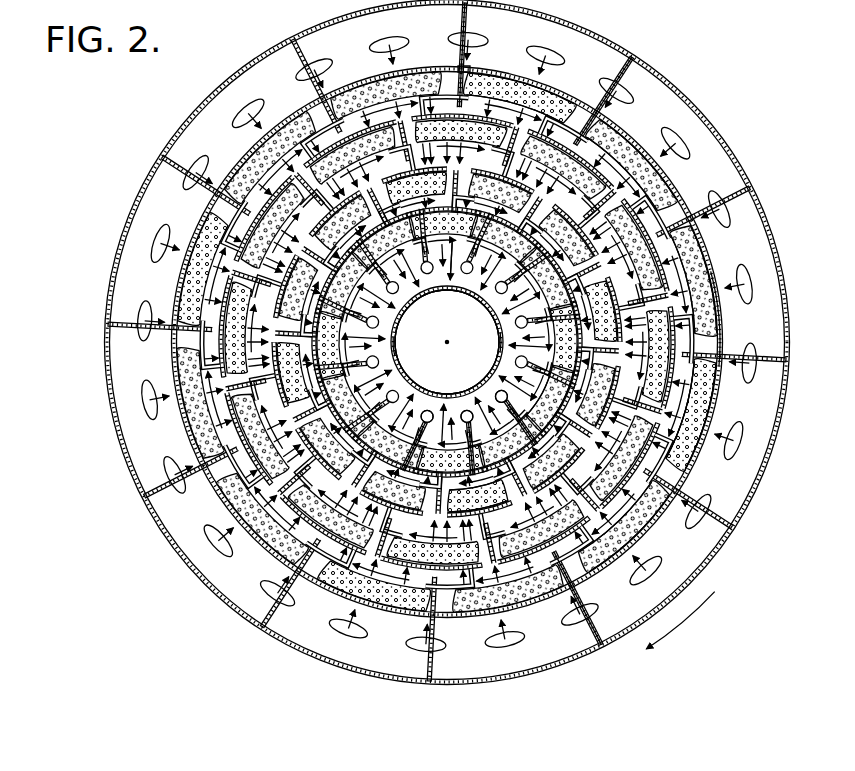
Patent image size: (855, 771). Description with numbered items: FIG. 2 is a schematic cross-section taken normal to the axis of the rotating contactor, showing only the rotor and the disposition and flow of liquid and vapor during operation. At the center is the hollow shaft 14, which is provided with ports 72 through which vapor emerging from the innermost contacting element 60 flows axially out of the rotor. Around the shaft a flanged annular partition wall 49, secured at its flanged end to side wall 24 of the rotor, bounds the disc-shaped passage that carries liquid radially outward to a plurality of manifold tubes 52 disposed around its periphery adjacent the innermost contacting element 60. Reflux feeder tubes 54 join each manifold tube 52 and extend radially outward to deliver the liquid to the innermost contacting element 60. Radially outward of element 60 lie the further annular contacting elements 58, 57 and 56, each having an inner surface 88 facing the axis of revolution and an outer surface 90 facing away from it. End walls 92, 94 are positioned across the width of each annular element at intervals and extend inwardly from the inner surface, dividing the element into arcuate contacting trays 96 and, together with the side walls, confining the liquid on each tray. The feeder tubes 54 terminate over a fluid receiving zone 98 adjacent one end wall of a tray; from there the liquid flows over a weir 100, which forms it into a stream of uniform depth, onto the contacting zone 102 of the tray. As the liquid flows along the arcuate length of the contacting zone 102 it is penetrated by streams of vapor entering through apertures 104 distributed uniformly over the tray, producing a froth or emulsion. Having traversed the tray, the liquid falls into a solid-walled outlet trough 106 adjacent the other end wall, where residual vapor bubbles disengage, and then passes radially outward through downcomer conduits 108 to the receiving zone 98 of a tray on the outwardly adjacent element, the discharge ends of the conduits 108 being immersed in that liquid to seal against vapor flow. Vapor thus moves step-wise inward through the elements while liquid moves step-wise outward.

The shaft 14 is at (396, 343).
The side wall 24 is at (605, 95).
The second partition wall 49 is at (461, 408).
The manifold tubes 52 is at (421, 416).
The reflux feeder tubes 54 is at (464, 425).
The contacting element 56 is at (655, 185).
The contacting element 57 is at (558, 598).
The contacting element 58 is at (480, 505).
The innermost contacting element 60 is at (383, 333).
The ports 72 is at (401, 320).
The inner surface 88 is at (672, 452).
The outer surface 90 is at (647, 522).
The end wall 92 is at (700, 382).
The end wall 94 is at (690, 238).
The arcuate contacting trays 96 is at (718, 316).
The fluid receiving zone 98 is at (512, 345).
The weir 100 is at (515, 418).
The contacting zone 102 is at (548, 385).
The apertures 104 is at (538, 74).
The outlet trough 106 is at (470, 12).
The downcomer conduits 108 is at (480, 50).